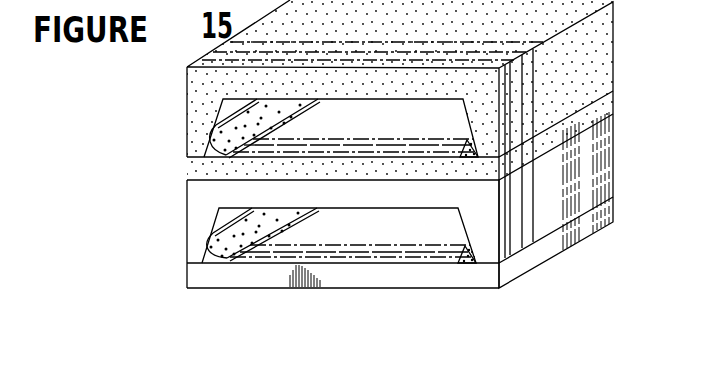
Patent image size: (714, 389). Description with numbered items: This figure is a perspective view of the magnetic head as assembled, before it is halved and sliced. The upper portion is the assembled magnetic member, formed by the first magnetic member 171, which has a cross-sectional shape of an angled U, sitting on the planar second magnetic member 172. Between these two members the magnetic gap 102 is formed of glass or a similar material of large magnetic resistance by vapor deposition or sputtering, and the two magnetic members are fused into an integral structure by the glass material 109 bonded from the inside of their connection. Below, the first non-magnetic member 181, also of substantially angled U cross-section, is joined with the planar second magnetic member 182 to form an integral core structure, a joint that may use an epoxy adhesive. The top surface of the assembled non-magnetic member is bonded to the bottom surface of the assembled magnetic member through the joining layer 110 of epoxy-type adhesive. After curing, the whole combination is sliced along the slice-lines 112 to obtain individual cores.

The first magnetic member 171 is at (187, 78).
The glass material 109 is at (207, 140).
The magnetic gap 102 is at (187, 157).
The second magnetic member 172 is at (187, 172).
The joining layer 110 is at (187, 180).
The first non-magnetic member 181 is at (187, 208).
The second magnetic member 182 is at (187, 278).
The slice-lines 112 is at (510, 270).